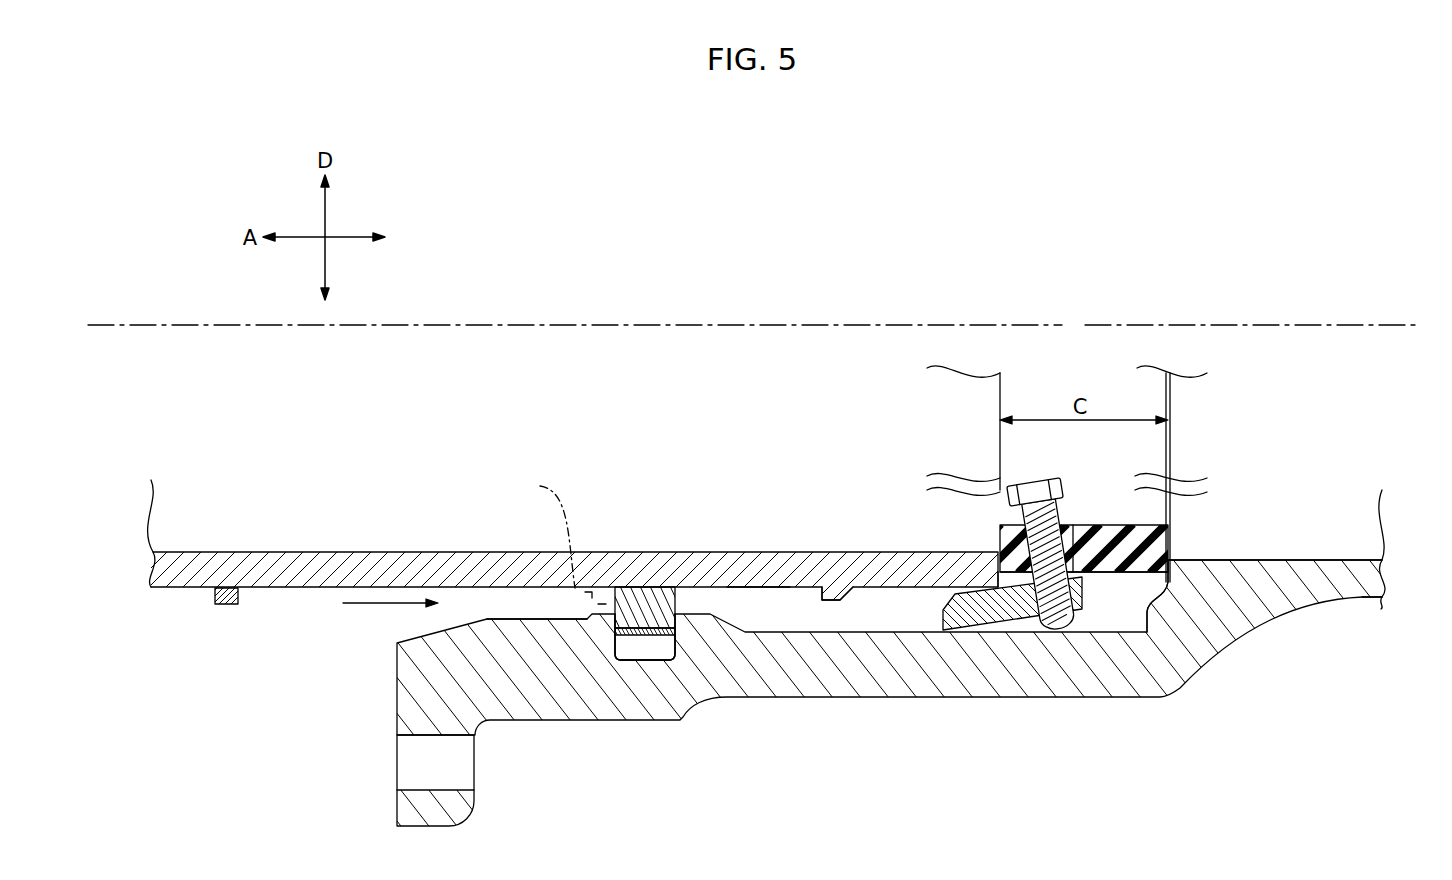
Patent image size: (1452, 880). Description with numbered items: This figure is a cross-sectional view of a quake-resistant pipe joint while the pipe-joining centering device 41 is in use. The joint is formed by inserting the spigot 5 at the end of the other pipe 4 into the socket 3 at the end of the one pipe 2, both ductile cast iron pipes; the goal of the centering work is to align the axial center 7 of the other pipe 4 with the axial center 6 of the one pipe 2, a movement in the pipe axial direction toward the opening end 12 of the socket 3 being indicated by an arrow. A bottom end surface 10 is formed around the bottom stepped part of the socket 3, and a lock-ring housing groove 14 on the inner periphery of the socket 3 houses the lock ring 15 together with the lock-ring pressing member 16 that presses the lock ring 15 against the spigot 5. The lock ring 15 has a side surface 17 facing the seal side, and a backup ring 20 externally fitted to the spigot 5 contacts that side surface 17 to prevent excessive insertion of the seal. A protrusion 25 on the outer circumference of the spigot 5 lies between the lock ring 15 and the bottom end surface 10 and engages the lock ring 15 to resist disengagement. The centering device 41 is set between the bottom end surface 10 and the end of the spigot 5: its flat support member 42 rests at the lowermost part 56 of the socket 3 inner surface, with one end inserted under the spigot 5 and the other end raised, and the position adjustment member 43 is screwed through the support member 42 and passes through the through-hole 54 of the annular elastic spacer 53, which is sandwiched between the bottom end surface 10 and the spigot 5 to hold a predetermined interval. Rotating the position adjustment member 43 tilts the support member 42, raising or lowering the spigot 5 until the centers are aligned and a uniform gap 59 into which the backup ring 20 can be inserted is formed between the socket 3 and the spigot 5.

The one pipe 2 is at (1365, 602).
The socket 3 is at (763, 698).
The other pipe 4 is at (178, 601).
The spigot 5 is at (727, 589).
The axial center 6 is at (1335, 322).
The axial center 7 is at (180, 322).
The bottom end surface 10 is at (1153, 593).
The opening end 12 is at (398, 608).
The lock-ring housing groove 14 is at (638, 660).
The lock ring 15 is at (647, 597).
The lock-ring pressing member 16 is at (665, 636).
The side surface 17 is at (612, 597).
The backup ring 20 is at (233, 606).
The protrusion 25 is at (833, 601).
The pipe-joining centering device 41 is at (1045, 528).
The support member 42 is at (997, 612).
The position adjustment member 43 is at (1038, 486).
The spacer 53 is at (1170, 540).
The through-hole 54 is at (1070, 528).
The lowermost part 56 is at (1112, 608).
The gap 59 is at (557, 602).